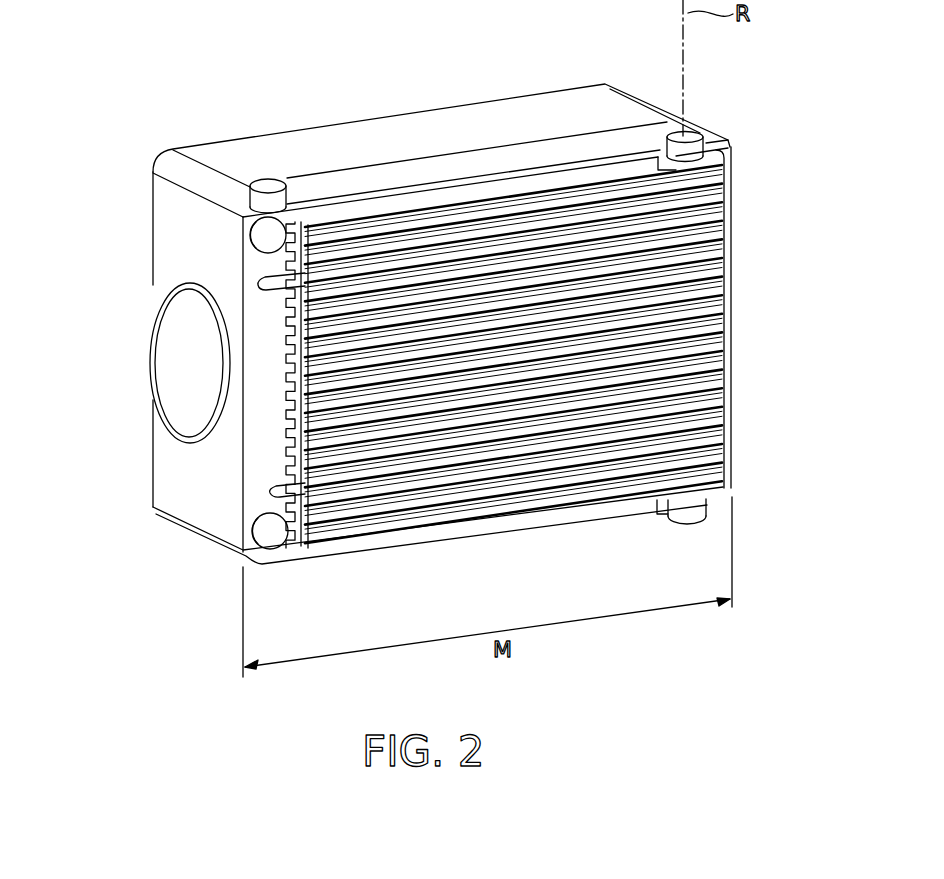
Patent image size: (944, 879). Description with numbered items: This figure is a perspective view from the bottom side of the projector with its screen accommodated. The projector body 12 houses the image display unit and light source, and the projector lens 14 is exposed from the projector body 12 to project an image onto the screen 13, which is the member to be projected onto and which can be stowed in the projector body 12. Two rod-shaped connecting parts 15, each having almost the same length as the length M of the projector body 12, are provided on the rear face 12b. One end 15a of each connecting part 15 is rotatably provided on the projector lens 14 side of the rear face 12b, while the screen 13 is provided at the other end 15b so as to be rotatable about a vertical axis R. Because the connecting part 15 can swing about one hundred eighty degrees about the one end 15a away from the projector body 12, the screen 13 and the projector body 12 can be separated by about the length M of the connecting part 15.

The projector body 12 is at (470, 123).
The rear face 12b is at (729, 153).
The screen 13 is at (736, 328).
The projector lens 14 is at (172, 342).
The connecting part 15 is at (490, 537).
The one end 15a is at (273, 183).
The other end 15b is at (683, 131).